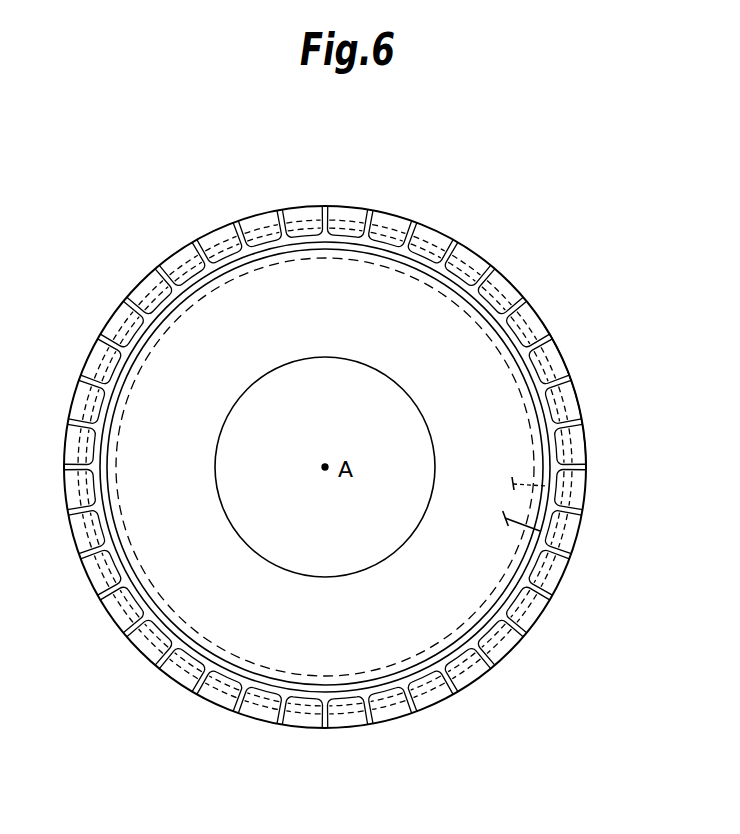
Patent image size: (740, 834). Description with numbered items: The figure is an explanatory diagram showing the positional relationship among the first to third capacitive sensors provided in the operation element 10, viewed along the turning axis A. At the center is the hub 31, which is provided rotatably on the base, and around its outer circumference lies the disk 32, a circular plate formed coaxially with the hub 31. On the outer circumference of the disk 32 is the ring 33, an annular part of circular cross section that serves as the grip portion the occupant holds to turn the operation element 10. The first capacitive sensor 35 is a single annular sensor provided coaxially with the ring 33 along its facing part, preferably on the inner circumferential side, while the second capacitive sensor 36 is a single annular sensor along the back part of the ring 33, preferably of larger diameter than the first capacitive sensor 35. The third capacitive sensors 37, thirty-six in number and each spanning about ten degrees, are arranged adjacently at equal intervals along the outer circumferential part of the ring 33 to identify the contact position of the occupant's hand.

The operation element 10 is at (532, 208).
The hub 31 is at (412, 413).
The disk 32 is at (163, 582).
The ring 33 is at (305, 724).
The first capacitive sensor 35 is at (480, 680).
The second capacitive sensor 36 is at (545, 612).
The third capacitive sensors 37 is at (390, 218).